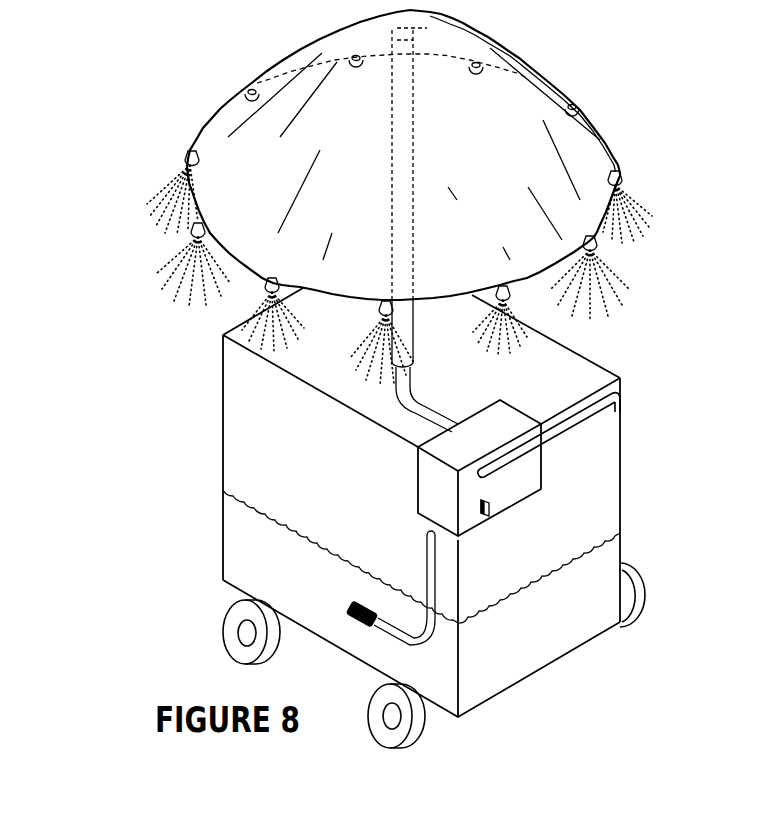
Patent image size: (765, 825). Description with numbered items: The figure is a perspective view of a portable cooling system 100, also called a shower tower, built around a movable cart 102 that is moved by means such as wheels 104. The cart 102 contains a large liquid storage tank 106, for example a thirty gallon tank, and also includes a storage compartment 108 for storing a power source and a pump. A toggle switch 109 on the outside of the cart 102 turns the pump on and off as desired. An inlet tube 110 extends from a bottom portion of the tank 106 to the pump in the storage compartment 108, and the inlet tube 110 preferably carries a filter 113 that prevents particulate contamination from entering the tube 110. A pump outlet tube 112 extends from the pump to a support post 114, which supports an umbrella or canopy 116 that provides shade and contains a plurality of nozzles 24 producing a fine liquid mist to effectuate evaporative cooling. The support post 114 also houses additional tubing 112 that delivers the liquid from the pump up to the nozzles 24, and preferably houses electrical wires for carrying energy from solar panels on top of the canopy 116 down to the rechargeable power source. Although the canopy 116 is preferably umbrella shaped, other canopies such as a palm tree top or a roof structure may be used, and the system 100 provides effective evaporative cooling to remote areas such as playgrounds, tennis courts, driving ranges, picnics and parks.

The nozzles 24 is at (145, 207).
The portable cooling system 100 is at (177, 350).
The movable cart 102 is at (262, 405).
The wheels 104 is at (265, 653).
The liquid storage tank 106 is at (262, 480).
The storage compartment 108 is at (560, 468).
The toggle switch 109 is at (490, 507).
The inlet tube 110 is at (430, 577).
The pump outlet tube 112 is at (413, 410).
The filter 113 is at (350, 607).
The support post 114 is at (407, 317).
The canopy 116 is at (527, 71).